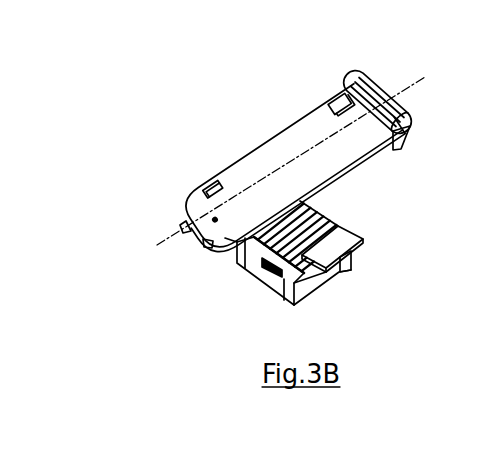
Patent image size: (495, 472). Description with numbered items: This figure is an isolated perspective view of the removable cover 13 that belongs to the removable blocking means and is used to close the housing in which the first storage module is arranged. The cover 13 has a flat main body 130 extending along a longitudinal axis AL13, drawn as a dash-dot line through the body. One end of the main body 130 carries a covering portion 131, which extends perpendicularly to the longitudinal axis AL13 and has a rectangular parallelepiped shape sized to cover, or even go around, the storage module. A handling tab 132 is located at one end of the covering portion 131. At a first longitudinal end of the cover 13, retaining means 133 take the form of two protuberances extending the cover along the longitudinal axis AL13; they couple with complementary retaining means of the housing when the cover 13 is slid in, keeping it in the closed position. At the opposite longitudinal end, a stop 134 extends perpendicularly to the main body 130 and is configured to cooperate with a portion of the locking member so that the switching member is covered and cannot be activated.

The removable cover 13 is at (272, 115).
The longitudinal axis AL13 is at (306, 144).
The main body 130 is at (273, 160).
The covering portion 131 is at (337, 218).
The handling tab 132 is at (340, 245).
The retaining means 133 is at (178, 223).
The stop 134 is at (413, 127).